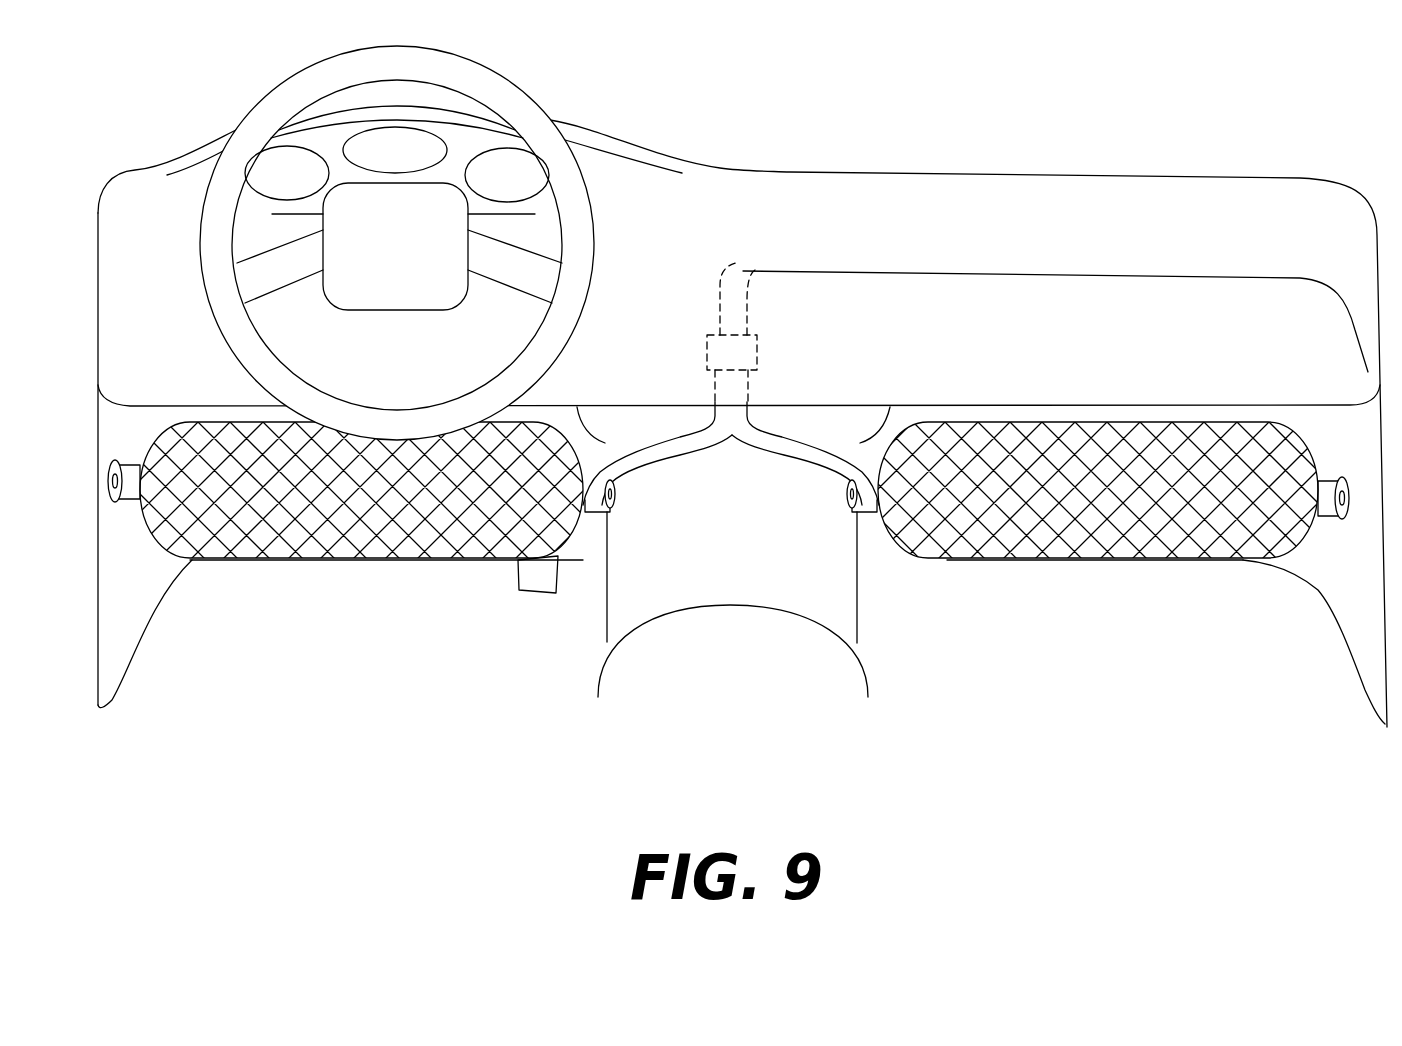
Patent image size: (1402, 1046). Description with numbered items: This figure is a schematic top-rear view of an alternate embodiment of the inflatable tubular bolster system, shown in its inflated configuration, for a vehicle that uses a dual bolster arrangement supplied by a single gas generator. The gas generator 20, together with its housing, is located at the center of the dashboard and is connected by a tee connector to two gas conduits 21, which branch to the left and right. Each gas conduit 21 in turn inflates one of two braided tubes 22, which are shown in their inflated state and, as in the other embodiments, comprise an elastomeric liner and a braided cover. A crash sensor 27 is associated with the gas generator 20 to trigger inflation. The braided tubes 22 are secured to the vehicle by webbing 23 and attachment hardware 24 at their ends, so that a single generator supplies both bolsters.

The gas generator 20 is at (712, 333).
The gas conduit 21 is at (657, 433).
The braided tube 22 is at (372, 562).
The webbing 23 is at (130, 503).
The attachment hardware 24 is at (114, 525).
The crash sensor 27 is at (742, 262).